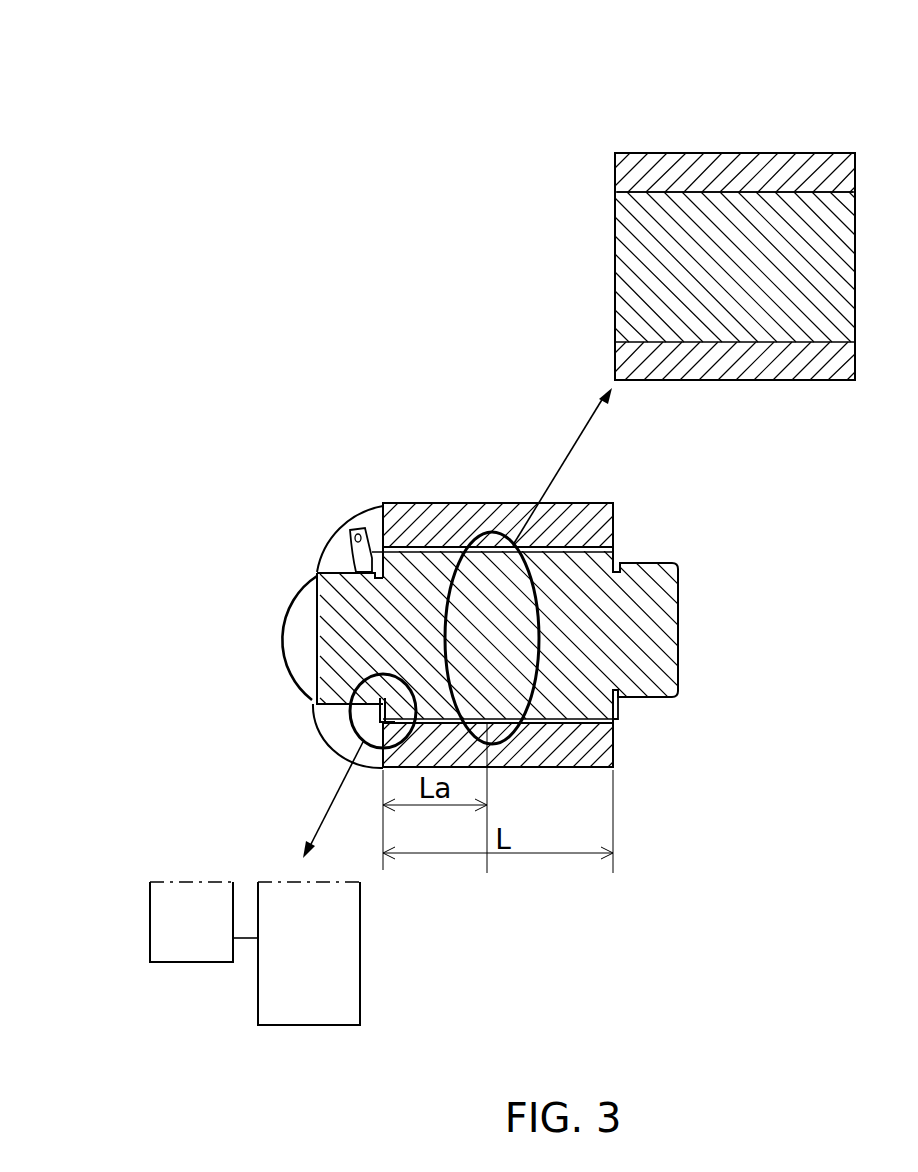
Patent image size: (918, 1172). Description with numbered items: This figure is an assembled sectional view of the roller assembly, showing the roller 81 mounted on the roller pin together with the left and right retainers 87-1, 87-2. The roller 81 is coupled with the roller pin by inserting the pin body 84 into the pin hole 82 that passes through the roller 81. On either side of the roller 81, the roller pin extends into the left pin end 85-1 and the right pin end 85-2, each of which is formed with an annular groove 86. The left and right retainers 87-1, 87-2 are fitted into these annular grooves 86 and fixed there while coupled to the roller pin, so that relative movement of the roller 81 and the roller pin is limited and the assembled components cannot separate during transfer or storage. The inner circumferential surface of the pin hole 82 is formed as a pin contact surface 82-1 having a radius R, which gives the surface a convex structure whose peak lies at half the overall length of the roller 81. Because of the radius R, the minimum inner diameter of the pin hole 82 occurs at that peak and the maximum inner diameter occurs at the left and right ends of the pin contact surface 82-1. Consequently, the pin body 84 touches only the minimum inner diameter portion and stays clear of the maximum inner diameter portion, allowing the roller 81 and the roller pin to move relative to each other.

The roller 81 is at (433, 527).
The pin hole 82 is at (386, 547).
The pin contact surface 82-1 is at (543, 637).
The radius R is at (740, 192).
The pin body 84 is at (477, 583).
The left pin end 85-1 is at (332, 635).
The right pin end 85-2 is at (643, 622).
The annular groove 86 is at (350, 683).
The left retainer 87-1 is at (362, 562).
The right retainer 87-2 is at (618, 712).